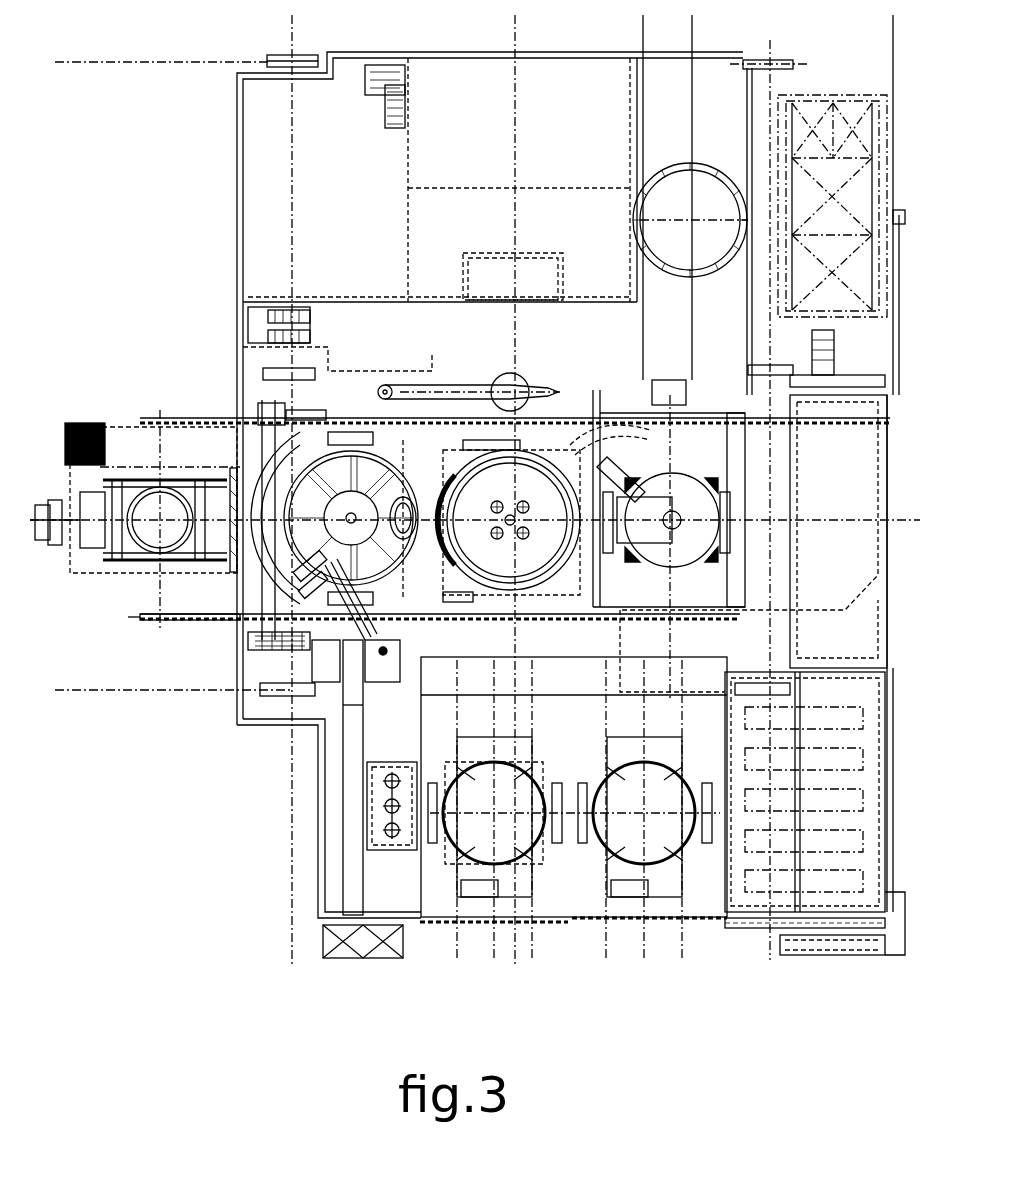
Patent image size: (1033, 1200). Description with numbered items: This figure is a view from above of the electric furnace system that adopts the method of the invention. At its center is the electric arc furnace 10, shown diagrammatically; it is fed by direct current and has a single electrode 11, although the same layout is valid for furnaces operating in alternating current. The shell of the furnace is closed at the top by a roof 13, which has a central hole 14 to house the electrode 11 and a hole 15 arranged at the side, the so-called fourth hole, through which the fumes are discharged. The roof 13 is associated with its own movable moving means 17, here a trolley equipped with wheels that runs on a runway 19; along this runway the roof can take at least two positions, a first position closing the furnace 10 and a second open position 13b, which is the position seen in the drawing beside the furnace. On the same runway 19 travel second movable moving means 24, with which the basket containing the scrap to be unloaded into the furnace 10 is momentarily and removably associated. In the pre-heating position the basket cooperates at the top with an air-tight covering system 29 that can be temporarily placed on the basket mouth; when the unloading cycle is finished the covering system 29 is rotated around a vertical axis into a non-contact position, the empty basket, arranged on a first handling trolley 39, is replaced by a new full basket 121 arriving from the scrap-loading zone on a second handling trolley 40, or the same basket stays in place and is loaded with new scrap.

The electric arc furnace 10 is at (515, 597).
The single electrode 11 is at (385, 384).
The roof 13 is at (248, 612).
The second open position 13b is at (263, 560).
The central hole 14 is at (347, 516).
The hole arranged at the side 15 is at (403, 557).
The movable moving means 17 is at (290, 418).
The runway 19 is at (182, 626).
The second movable moving means 24 is at (736, 450).
The air-tight covering system 29 is at (688, 547).
The first handling trolley 39 is at (663, 878).
The second handling trolley 40 is at (513, 877).
The full basket 121 is at (485, 838).